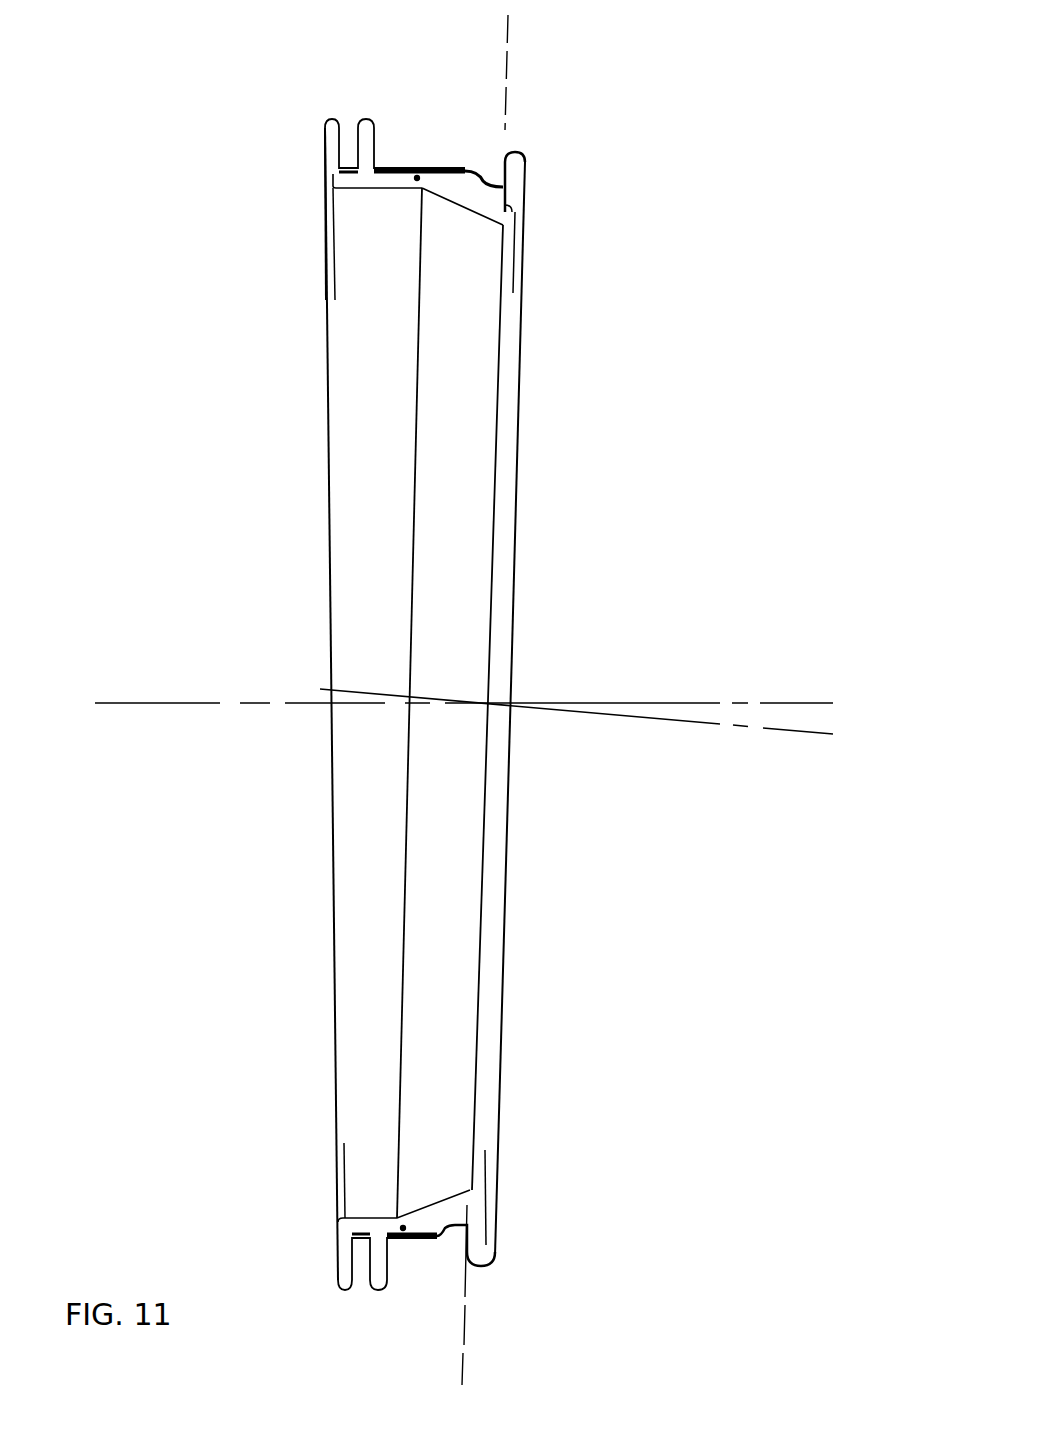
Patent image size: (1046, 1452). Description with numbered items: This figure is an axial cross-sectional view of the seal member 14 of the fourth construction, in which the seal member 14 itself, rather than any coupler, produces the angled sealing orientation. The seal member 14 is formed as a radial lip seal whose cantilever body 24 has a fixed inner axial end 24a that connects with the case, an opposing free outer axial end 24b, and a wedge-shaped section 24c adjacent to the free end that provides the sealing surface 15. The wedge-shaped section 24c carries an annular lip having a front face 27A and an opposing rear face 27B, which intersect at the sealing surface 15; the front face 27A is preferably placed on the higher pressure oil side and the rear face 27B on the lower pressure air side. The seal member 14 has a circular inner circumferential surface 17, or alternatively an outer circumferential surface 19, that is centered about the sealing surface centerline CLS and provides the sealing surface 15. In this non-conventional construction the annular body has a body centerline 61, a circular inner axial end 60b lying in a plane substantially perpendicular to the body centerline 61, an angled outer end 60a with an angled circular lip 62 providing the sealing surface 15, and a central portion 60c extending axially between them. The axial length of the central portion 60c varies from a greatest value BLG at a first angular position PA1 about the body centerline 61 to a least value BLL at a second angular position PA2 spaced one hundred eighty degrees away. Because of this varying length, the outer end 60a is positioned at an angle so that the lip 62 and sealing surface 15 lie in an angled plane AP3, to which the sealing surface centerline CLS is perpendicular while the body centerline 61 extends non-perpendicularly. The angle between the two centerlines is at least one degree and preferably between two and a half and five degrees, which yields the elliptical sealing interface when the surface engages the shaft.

The annular seal member 14 is at (281, 326).
The sealing surface 15 is at (508, 384).
The inner circumferential surface 17 is at (492, 552).
The outer circumferential surface 19 is at (516, 206).
The cantilever body 24 is at (429, 697).
The fixed inner axial end 24a is at (322, 393).
The free outer axial end 24b is at (532, 315).
The wedge-shaped section 24c is at (462, 211).
The front face 27A is at (508, 447).
The rear face 27B is at (450, 447).
The angled outer end 60a is at (530, 187).
The inner axial end 60b is at (325, 218).
The central portion 60c is at (443, 178).
The body centerline 61 is at (800, 703).
The angled circular lip 62 is at (498, 216).
The angled plane AP3 is at (510, 50).
The first angular position PA1 is at (417, 178).
The second angular position PA2 is at (404, 1230).
The greatest axial length BLG is at (337, 278).
The least axial length BLL is at (348, 1155).
The sealing surface centerline CLS is at (800, 735).